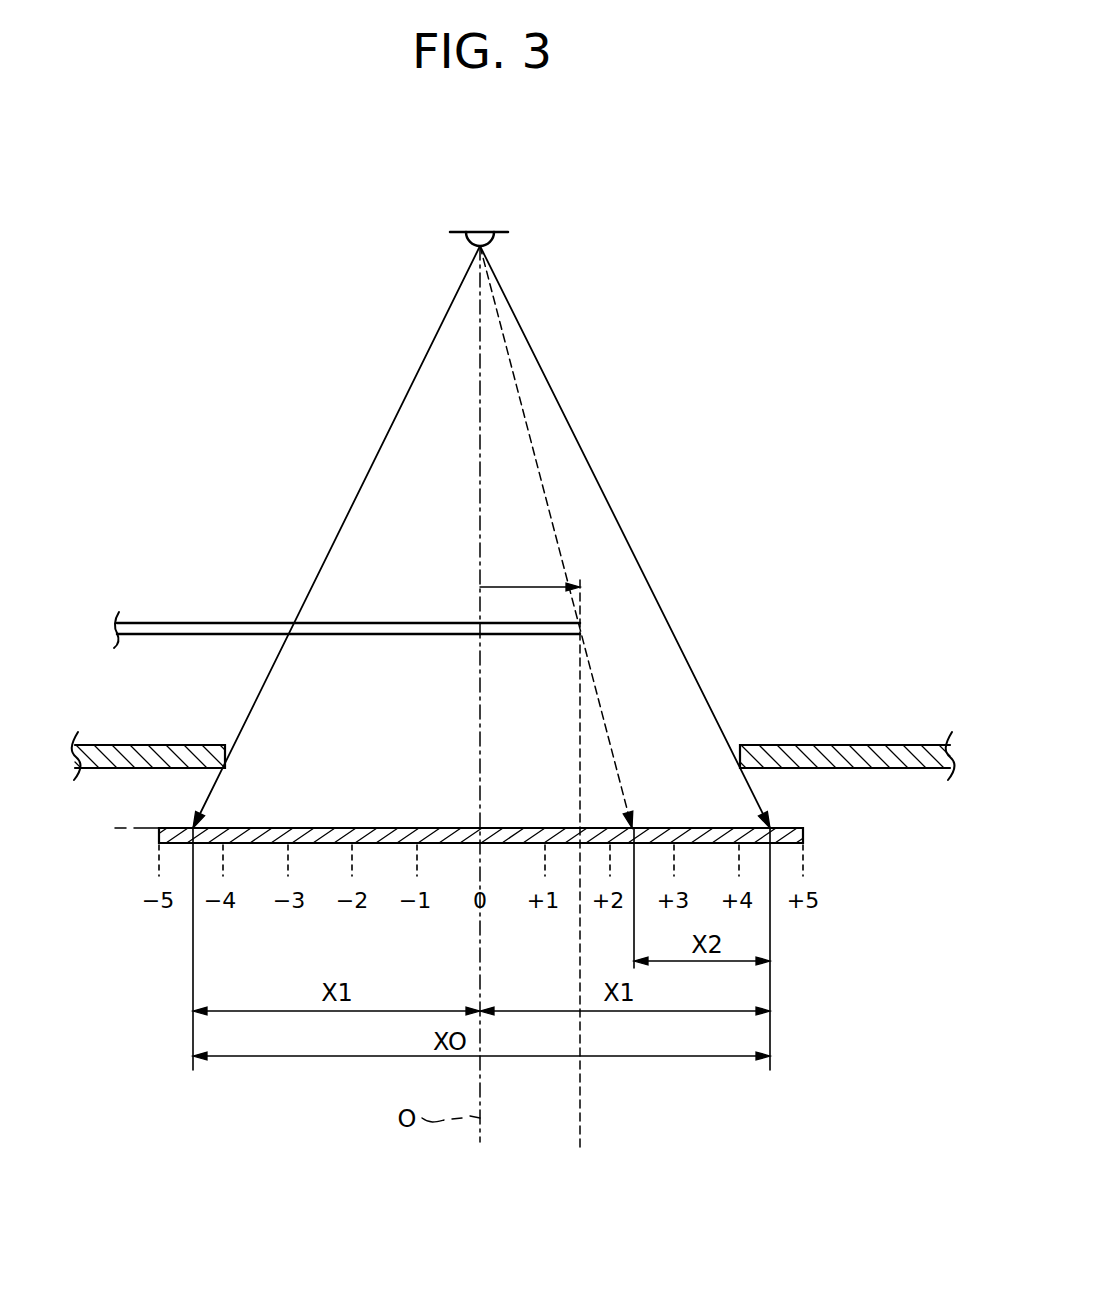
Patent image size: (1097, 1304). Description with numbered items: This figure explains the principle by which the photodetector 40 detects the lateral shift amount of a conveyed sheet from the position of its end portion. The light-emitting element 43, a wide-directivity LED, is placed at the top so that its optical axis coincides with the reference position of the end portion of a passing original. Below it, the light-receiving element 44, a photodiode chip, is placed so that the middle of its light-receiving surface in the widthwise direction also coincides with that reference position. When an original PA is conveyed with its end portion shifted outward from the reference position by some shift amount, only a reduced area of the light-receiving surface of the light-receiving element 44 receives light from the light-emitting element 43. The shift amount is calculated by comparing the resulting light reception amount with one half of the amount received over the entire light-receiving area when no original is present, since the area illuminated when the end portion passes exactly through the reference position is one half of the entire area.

The photodetector 40 is at (298, 449).
The light-emitting element 43 is at (479, 230).
The light-receiving element 44 is at (803, 835).
The original PA is at (166, 622).